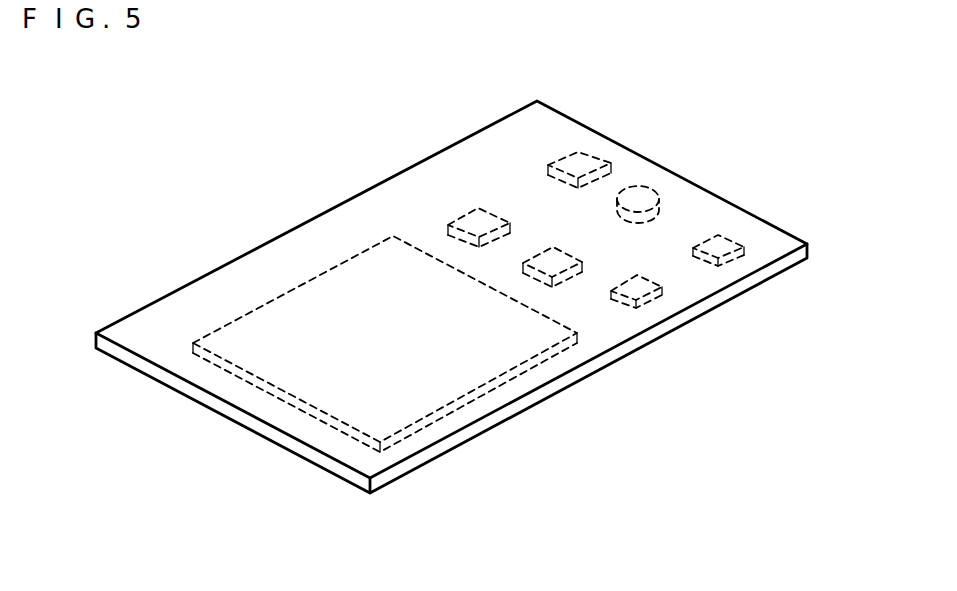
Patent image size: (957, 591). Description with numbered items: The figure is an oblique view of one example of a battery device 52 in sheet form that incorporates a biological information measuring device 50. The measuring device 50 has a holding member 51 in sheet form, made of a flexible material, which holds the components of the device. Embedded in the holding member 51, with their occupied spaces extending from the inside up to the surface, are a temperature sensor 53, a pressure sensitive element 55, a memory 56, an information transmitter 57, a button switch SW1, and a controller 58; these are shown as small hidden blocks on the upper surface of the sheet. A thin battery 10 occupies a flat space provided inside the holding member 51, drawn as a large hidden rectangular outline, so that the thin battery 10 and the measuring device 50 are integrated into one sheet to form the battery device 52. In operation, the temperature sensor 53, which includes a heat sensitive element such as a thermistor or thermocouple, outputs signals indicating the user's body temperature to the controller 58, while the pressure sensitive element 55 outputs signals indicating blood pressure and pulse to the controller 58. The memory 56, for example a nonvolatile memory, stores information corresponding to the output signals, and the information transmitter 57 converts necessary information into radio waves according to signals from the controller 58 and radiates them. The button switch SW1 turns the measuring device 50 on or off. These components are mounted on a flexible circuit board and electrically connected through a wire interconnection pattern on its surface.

The thin battery 10 is at (350, 278).
The biological information measuring device 50 is at (421, 150).
The holding member 51 is at (226, 263).
The battery device 52 is at (427, 84).
The temperature sensor 53 is at (478, 222).
The pressure sensitive element 55 is at (550, 262).
The memory 56 is at (637, 297).
The information transmitter 57 is at (637, 202).
The controller 58 is at (580, 160).
The button switch SW1 is at (715, 250).